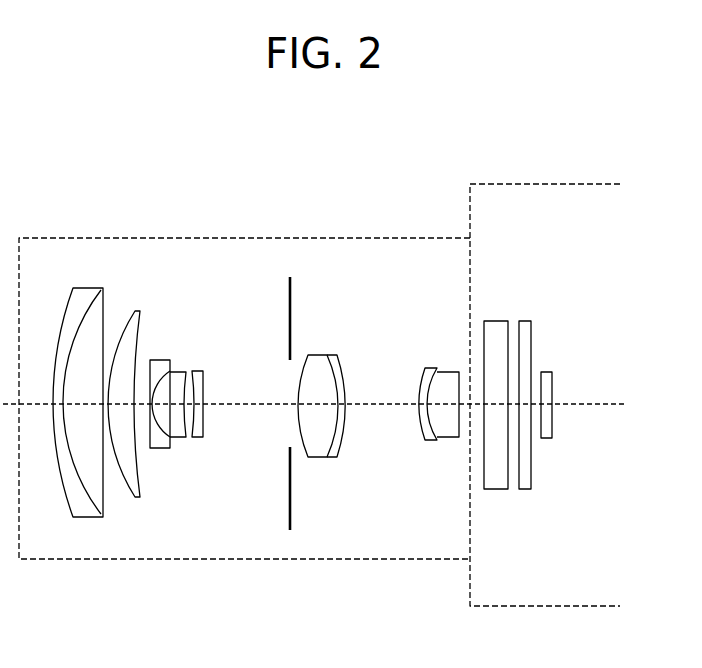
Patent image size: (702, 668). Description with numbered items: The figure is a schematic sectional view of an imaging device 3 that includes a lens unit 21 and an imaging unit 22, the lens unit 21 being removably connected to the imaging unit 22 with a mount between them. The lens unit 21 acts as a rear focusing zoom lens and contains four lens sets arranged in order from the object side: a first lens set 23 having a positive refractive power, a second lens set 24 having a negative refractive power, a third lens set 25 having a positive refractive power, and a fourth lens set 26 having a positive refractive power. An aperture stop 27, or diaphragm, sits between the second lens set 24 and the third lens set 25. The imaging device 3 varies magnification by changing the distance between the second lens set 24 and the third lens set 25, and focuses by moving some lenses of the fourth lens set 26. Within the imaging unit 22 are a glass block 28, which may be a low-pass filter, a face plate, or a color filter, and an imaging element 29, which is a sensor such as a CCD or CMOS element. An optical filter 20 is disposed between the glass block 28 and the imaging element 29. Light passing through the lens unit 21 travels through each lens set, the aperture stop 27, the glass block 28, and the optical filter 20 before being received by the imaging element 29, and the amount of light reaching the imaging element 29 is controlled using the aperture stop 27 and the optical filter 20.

The imaging device 3 is at (305, 126).
The lens unit 21 is at (93, 221).
The imaging unit 22 is at (551, 169).
The first lens set 23 is at (60, 283).
The second lens set 24 is at (151, 345).
The third lens set 25 is at (299, 346).
The fourth lens set 26 is at (413, 360).
The aperture stop 27 is at (290, 307).
The glass block 28 is at (493, 321).
The optical filter 20 is at (528, 321).
The imaging element 29 is at (552, 383).